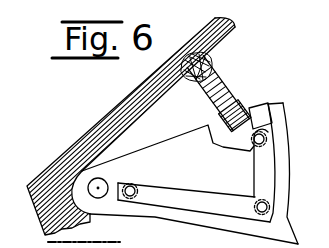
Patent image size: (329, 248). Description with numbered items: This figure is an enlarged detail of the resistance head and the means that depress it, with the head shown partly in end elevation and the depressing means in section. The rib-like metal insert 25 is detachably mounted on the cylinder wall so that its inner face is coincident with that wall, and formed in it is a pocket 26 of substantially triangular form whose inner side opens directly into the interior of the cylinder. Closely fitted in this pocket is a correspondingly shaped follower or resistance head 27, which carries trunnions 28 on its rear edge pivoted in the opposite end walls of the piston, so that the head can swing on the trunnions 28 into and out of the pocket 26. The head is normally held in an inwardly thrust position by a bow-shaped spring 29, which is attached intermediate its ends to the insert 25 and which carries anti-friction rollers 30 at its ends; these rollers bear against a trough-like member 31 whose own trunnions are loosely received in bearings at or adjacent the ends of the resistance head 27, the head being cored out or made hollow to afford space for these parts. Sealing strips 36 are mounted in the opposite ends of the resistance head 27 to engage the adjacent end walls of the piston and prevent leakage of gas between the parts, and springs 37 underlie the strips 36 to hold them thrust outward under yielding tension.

The rib-like metal insert 25 is at (118, 108).
The pocket 26 is at (152, 108).
The resistance head 27 is at (283, 167).
The trunnions 28 is at (100, 191).
The bow-shaped spring 29 is at (226, 88).
The anti-friction rollers 30 is at (222, 119).
The trough-like member 31 is at (271, 112).
The sealing strips 36 is at (229, 208).
The springs 37 is at (266, 138).